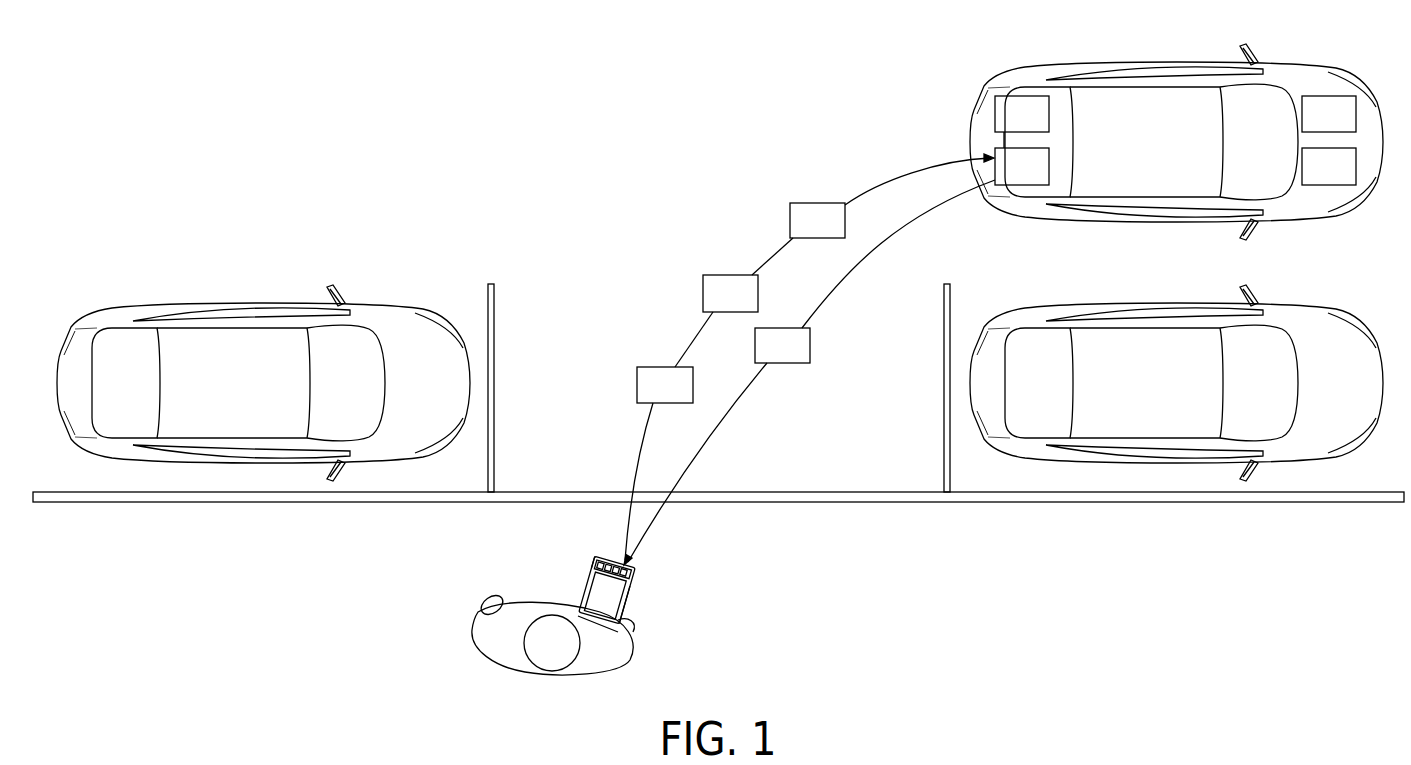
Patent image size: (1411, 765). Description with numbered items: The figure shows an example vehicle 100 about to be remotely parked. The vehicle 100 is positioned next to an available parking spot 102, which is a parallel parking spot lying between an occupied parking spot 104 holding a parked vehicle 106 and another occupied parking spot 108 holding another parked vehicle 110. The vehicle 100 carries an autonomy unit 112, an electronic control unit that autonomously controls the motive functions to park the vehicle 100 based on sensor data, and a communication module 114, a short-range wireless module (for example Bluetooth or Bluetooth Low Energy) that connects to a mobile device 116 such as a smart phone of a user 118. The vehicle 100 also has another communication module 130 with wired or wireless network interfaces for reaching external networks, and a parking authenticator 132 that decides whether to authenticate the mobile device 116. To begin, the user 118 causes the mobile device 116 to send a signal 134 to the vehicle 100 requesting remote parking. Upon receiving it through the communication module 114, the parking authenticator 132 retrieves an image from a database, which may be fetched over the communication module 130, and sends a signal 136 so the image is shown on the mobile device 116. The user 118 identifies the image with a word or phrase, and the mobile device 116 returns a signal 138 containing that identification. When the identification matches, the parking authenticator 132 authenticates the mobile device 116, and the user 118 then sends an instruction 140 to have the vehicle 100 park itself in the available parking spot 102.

The vehicle 100 is at (1130, 154).
The available parking spot 102 is at (813, 424).
The occupied parking spot 104 is at (240, 463).
The parked vehicle 106 is at (210, 393).
The occupied parking spot 108 is at (1152, 463).
The parked vehicle 110 is at (1123, 393).
The autonomy unit 112 is at (1005, 125).
The communication module 114 is at (1005, 178).
The mobile device 116 is at (635, 602).
The user 118 is at (502, 657).
The communication module 130 is at (1312, 125).
The parking authenticator 132 is at (1312, 178).
The signal 134 is at (648, 396).
The signal 136 is at (765, 356).
The signal 138 is at (713, 304).
The instruction 140 is at (800, 231).